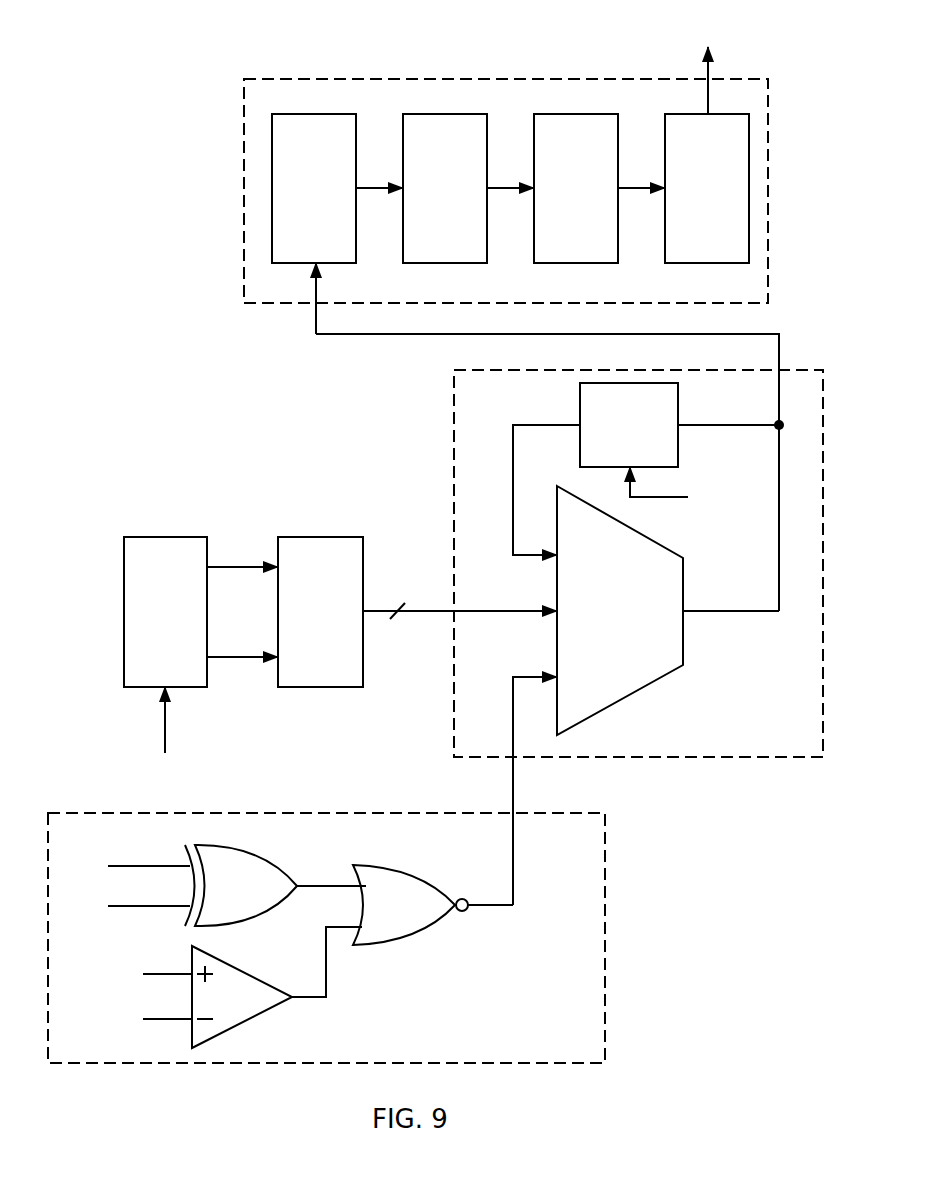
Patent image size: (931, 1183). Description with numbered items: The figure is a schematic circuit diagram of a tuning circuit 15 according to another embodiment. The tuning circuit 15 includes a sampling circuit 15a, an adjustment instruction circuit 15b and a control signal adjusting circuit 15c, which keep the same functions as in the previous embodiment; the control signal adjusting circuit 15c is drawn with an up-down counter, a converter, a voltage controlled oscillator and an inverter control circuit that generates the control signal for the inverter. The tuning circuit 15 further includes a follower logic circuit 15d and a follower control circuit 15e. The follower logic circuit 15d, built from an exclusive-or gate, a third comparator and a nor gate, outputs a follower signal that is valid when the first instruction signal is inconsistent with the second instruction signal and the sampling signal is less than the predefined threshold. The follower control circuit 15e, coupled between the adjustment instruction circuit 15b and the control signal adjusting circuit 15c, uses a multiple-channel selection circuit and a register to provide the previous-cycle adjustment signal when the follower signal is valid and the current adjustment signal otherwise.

The tuning circuit 15 is at (124, 54).
The sampling circuit 15a is at (195, 535).
The adjustment instruction circuit 15b is at (350, 535).
The control signal adjusting circuit 15c is at (352, 78).
The follower logic circuit 15d is at (605, 968).
The follower control circuit 15e is at (454, 450).